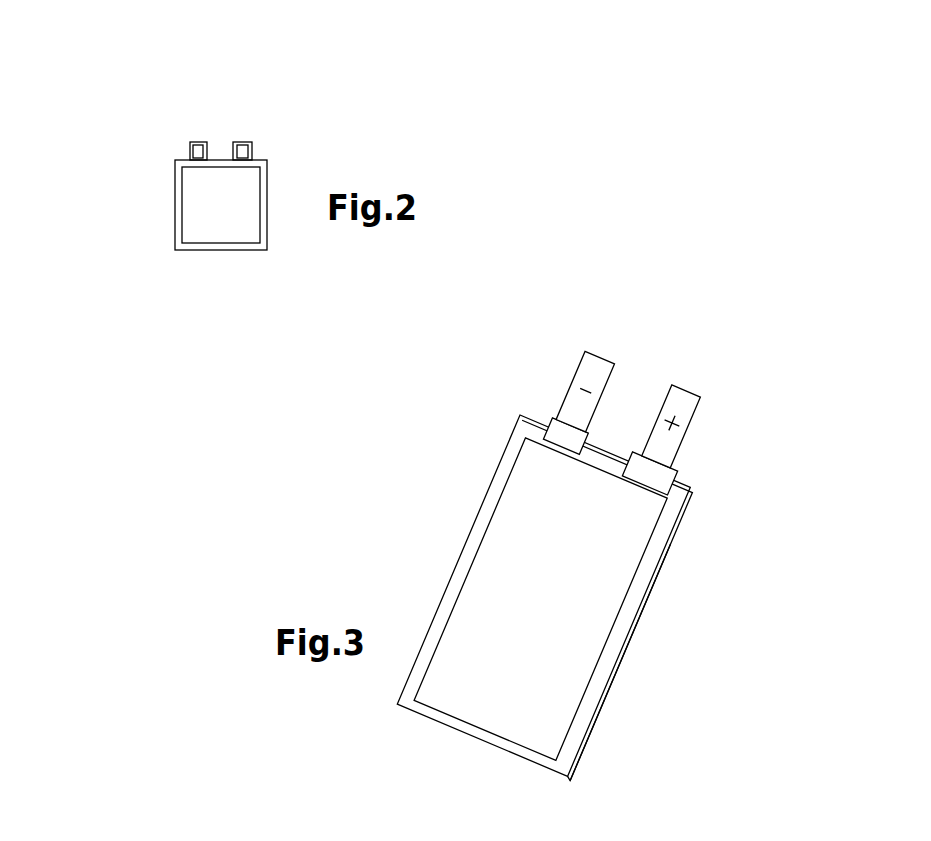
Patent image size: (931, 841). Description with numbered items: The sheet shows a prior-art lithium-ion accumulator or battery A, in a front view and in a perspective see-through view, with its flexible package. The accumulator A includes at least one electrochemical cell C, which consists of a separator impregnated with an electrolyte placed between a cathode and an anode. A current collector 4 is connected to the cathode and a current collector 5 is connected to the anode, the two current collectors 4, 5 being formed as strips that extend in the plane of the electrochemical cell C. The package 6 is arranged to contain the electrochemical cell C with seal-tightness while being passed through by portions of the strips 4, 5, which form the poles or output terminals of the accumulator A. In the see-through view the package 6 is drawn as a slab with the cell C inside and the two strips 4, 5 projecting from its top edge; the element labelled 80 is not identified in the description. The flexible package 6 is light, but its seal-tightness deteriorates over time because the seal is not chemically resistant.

In FIG. 2, the lithium-ion accumulator A is at (195, 169).
In FIG. 3, the lithium-ion accumulator A is at (583, 565).
In FIG. 2, the current collector 4 is at (198, 142).
In FIG. 2, the current collector 5 is at (243, 140).
In FIG. 2, the package 6 is at (192, 223).
In FIG. 3, the package 6 is at (450, 578).
In FIG. 3, the positive terminal tab 80 is at (667, 440).
In FIG. 3, the electrochemical cell C is at (573, 673).